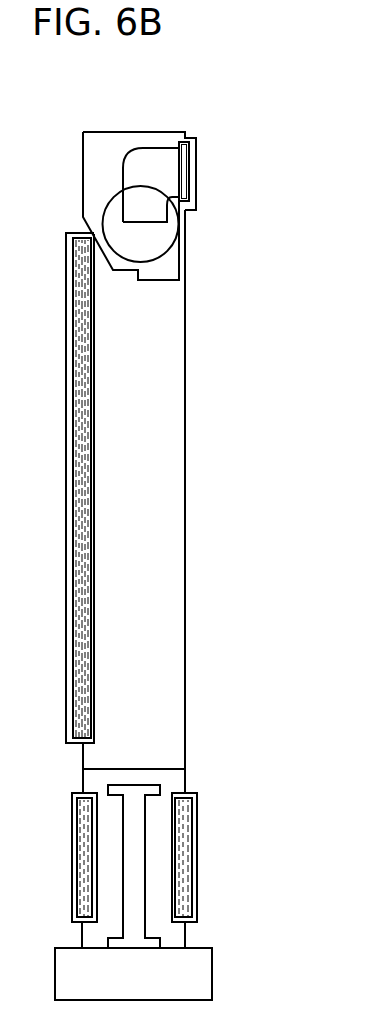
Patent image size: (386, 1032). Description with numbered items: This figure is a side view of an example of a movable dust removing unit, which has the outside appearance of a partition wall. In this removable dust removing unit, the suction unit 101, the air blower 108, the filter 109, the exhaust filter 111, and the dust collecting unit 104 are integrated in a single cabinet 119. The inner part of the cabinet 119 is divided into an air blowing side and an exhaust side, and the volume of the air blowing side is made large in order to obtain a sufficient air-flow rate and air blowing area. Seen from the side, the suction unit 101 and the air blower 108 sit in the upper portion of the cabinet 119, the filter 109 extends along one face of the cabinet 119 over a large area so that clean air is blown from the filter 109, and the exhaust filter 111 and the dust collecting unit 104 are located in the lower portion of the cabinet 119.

The cabinet 119 is at (109, 142).
The suction unit 101 is at (187, 167).
The air blower 108 is at (174, 260).
The filter 109 is at (80, 353).
The exhaust filter 111 is at (80, 815).
The dust collecting unit 104 is at (160, 786).